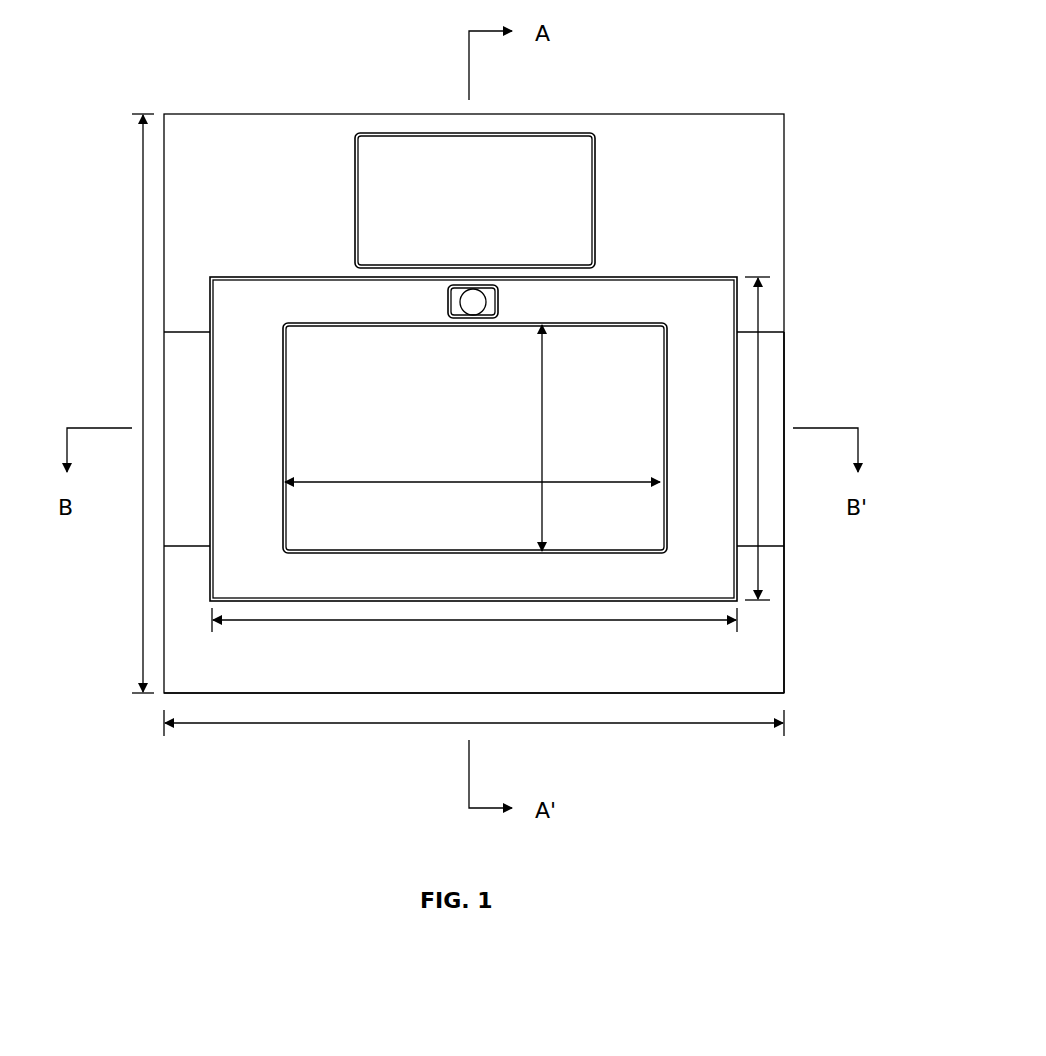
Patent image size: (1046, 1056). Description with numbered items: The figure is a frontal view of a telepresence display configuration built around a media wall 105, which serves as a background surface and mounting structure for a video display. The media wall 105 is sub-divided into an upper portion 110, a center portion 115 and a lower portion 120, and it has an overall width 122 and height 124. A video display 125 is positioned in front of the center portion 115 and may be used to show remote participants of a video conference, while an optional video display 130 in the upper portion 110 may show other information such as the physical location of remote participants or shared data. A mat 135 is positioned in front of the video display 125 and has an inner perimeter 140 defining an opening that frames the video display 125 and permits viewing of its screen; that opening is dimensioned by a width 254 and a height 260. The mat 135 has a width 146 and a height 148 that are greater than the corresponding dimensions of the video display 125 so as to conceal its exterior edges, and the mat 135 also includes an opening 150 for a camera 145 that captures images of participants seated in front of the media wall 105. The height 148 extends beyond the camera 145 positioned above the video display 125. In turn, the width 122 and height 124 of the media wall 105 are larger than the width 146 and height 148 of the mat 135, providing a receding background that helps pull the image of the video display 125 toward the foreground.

The media wall 105 is at (658, 80).
The upper portion 110 is at (784, 187).
The center portion 115 is at (784, 362).
The lower portion 120 is at (784, 612).
The width 122 is at (640, 723).
The height 124 is at (143, 200).
The video display 125 is at (475, 438).
The video display 130 is at (475, 200).
The mat 135 is at (473, 439).
The inner perimeter 140 is at (290, 436).
The camera 145 is at (498, 300).
The width 146 is at (555, 621).
The height 148 is at (758, 405).
The opening 150 is at (448, 305).
The display width 254 is at (490, 481).
The display height 260 is at (543, 413).